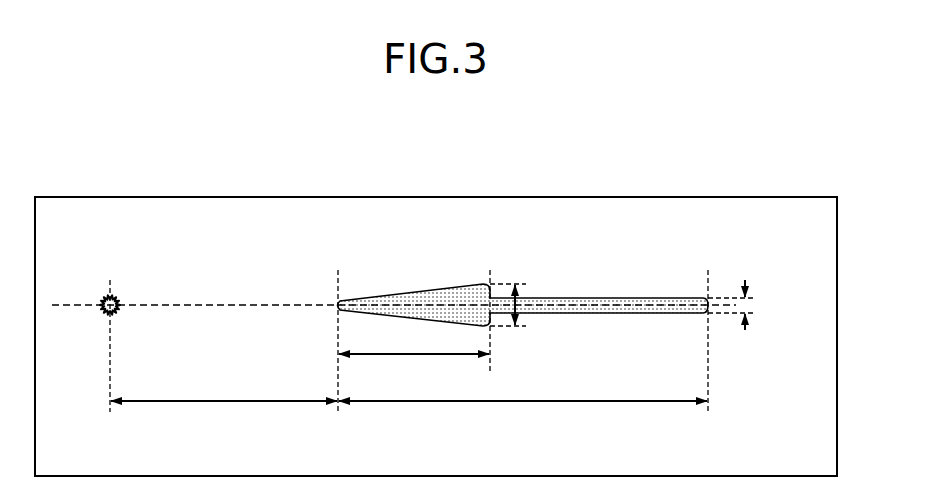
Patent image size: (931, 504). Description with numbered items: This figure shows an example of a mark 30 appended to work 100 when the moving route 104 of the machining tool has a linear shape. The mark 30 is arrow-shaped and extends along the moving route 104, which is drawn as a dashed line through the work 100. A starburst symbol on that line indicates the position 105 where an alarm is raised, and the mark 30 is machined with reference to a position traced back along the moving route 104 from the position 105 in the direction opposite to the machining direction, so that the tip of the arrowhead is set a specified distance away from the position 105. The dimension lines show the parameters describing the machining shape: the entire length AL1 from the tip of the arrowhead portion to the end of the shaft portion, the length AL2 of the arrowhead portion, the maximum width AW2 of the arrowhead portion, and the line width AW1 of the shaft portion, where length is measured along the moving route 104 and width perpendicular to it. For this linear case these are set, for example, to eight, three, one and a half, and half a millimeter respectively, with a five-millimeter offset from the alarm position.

The work 100 is at (718, 196).
The moving route 104 is at (198, 303).
The position where an alarm is raised 105 is at (104, 296).
The mark 30 is at (422, 274).
The entire length AL1 is at (523, 417).
The length of the arrowhead portion AL2 is at (414, 366).
The line width of the shaft portion AW1 is at (769, 313).
The maximum width of the arrowhead portion AW2 is at (518, 308).